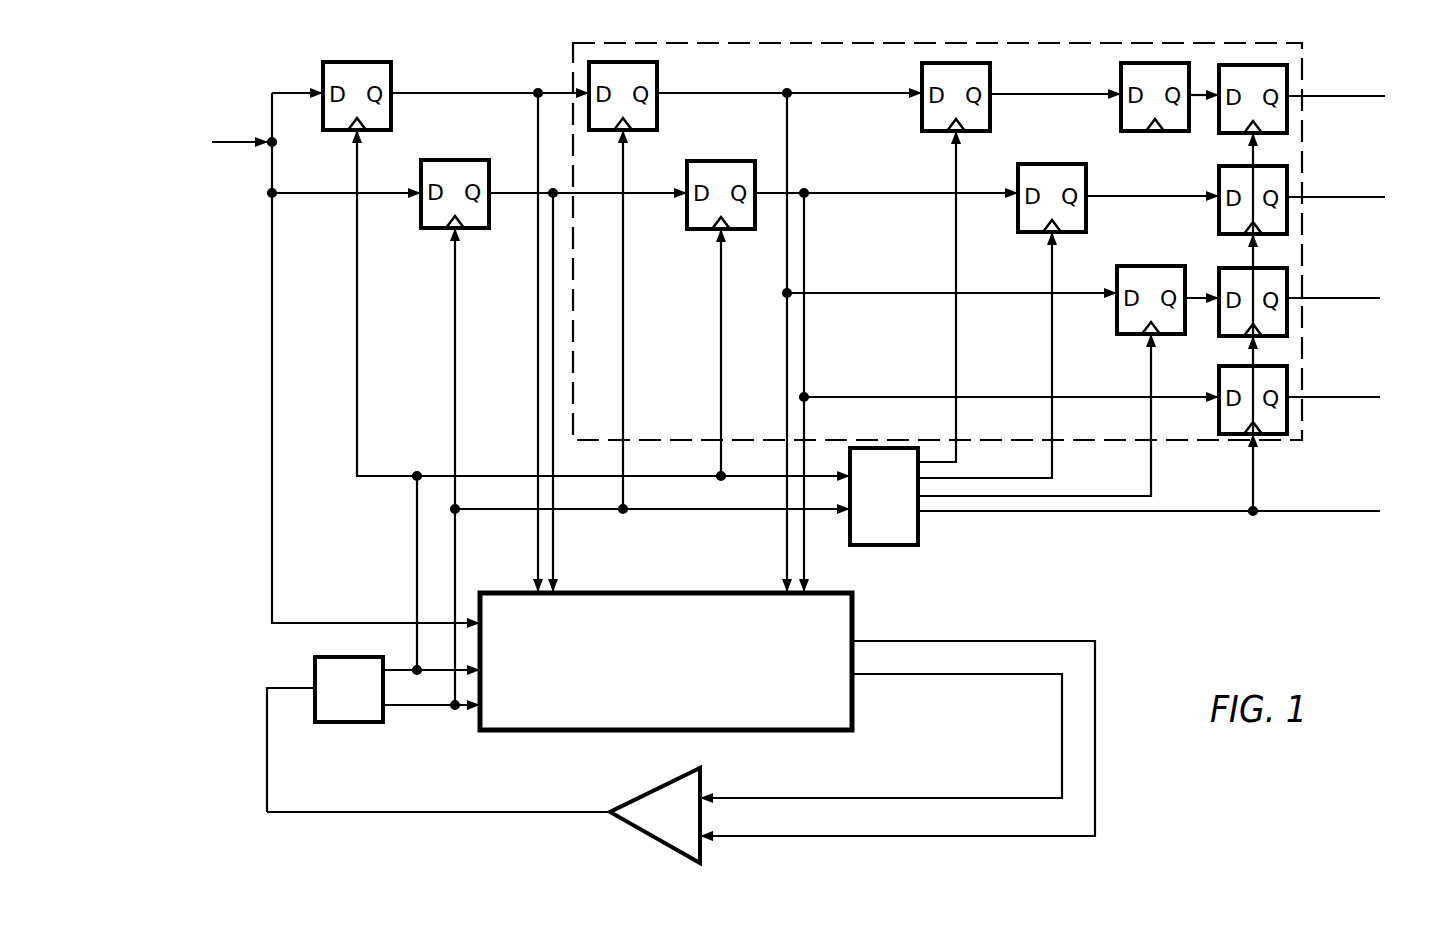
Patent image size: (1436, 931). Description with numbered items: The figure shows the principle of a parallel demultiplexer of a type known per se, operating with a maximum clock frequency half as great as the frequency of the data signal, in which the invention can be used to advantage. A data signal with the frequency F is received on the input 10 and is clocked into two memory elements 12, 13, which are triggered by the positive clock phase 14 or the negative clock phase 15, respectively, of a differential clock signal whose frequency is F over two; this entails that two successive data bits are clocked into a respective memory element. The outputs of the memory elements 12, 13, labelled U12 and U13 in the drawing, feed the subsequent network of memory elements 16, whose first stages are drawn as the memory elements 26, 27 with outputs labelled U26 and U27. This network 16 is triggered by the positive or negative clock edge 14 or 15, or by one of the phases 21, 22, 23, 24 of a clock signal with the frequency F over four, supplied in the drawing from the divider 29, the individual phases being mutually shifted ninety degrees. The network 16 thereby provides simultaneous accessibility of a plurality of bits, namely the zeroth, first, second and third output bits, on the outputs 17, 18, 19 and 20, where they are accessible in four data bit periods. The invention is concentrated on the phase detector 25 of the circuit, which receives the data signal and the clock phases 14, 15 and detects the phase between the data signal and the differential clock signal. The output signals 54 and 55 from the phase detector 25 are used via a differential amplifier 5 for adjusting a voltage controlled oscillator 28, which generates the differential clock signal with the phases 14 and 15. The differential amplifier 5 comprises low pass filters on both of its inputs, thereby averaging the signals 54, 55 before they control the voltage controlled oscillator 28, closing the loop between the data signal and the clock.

The differential amplifier 5 is at (702, 840).
The input 10 is at (242, 140).
The memory element 12 is at (392, 72).
The memory element 13 is at (466, 140).
The positive clock phase 14 is at (455, 540).
The negative clock phase 15 is at (417, 540).
The network of memory elements 16 is at (1303, 80).
The output 17 is at (1335, 99).
The output 18 is at (1333, 200).
The output 19 is at (1330, 300).
The output 20 is at (1356, 399).
The clock phase 21 is at (956, 456).
The clock phase 22 is at (1052, 464).
The clock phase 23 is at (1151, 474).
The clock phase 24 is at (1280, 514).
The phase detector 25 is at (852, 618).
The D flip-flop 26 is at (659, 108).
The D flip-flop 27 is at (688, 186).
The voltage controlled oscillator 28 is at (348, 722).
The divider 29 is at (918, 525).
The output signal 54 is at (1062, 722).
The output signal 55 is at (1095, 718).
The flip-flop 12 output signal U12 is at (492, 77).
The flip-flop 13 output signal U13 is at (503, 198).
The flip-flop 26 output signal U26 is at (687, 92).
The flip-flop 27 output signal U27 is at (770, 199).